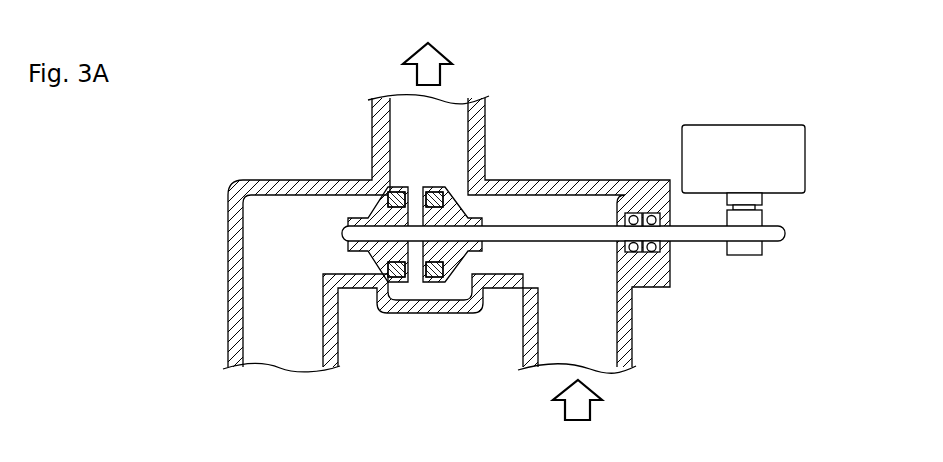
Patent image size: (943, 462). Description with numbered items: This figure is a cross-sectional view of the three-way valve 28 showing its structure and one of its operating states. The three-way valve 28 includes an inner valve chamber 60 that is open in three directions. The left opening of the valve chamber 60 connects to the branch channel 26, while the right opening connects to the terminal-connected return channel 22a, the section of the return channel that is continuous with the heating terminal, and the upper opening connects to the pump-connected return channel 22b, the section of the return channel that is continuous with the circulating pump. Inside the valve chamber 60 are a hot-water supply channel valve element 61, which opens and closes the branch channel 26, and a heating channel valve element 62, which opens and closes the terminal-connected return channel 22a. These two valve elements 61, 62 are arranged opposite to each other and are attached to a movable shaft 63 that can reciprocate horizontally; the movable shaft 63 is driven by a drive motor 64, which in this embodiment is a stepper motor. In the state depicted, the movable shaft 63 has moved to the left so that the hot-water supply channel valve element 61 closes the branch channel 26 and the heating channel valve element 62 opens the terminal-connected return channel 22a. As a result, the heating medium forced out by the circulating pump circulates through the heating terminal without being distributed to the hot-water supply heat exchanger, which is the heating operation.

The three-way valve 28 is at (296, 129).
The terminal-connected return channel 22a is at (633, 340).
The pump-connected return channel 22b is at (486, 112).
The branch channel 26 is at (337, 340).
The valve chamber 60 is at (446, 287).
The hot-water supply channel valve element 61 is at (360, 215).
The heating channel valve element 62 is at (462, 198).
The movable shaft 63 is at (702, 243).
The drive motor 64 is at (781, 125).